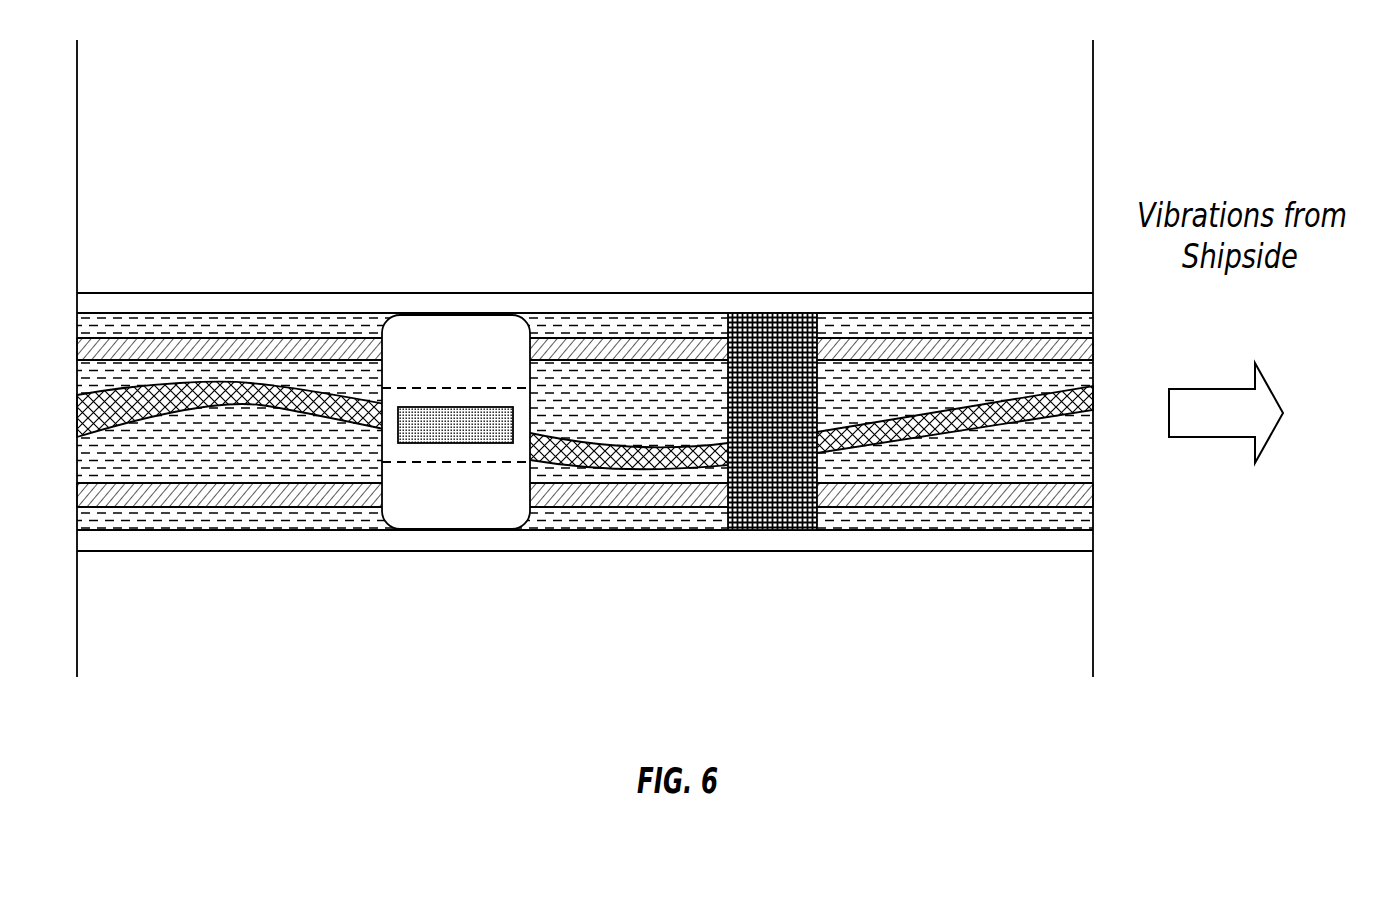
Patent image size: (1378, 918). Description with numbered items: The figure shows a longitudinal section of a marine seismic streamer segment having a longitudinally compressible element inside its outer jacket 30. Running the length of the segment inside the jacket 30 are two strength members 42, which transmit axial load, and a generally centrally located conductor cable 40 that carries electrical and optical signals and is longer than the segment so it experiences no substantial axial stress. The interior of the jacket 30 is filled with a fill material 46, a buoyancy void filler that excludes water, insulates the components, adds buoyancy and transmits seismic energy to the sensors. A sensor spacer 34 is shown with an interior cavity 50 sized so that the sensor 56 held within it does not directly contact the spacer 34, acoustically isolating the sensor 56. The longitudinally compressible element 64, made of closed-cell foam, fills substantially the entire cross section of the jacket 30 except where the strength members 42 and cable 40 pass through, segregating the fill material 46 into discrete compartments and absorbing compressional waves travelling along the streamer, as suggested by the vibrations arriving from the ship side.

The jacket 30 is at (253, 293).
The sensor spacer 34 is at (463, 505).
The conductor cable 40 is at (880, 422).
The strength members 42 is at (155, 338).
The fill material 46 is at (1020, 468).
The interior cavity 50 is at (507, 388).
The sensor 56 is at (465, 407).
The longitudinally compressible element 64 is at (768, 513).